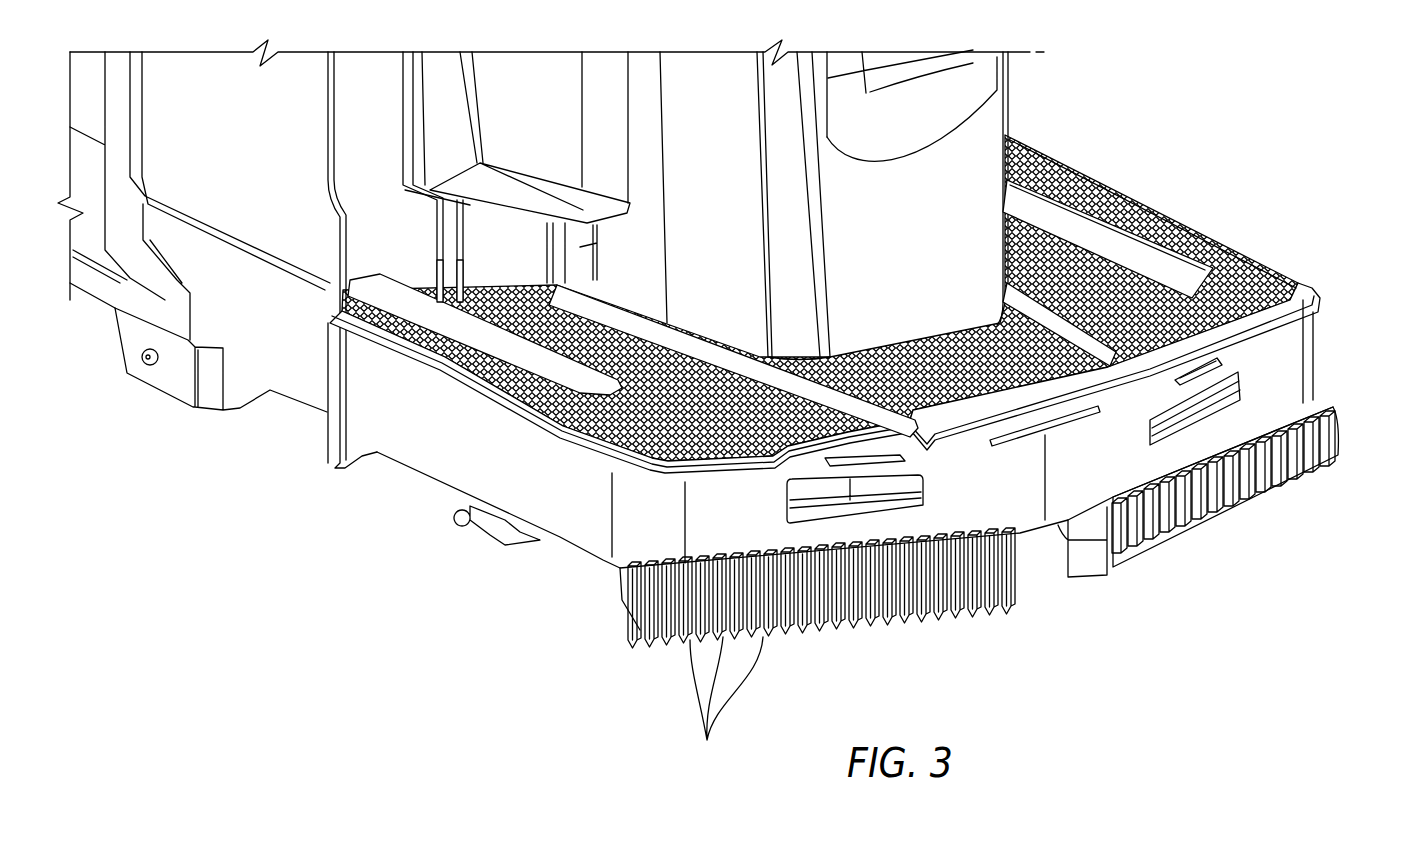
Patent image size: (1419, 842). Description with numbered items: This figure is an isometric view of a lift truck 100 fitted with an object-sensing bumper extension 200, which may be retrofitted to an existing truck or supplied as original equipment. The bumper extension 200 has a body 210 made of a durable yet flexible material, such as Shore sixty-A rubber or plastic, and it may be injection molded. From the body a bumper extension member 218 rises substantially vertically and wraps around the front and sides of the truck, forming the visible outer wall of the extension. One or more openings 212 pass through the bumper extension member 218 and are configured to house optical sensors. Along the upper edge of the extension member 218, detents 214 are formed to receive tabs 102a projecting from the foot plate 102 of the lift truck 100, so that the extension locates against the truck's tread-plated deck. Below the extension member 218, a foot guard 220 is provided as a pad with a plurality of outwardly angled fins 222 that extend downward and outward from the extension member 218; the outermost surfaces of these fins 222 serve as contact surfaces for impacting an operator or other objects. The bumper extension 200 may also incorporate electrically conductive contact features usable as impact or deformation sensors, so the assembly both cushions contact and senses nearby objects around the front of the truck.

The lift truck 100 is at (1013, 98).
The foot plate 102 is at (1192, 270).
The tabs 102a is at (1210, 370).
The object-sensing bumper extension 200 is at (824, 536).
The body 210 is at (405, 472).
The openings 212 is at (780, 499).
The detents 214 is at (1236, 357).
The bumper extension member 218 is at (1007, 498).
The foot guard 220 is at (1090, 552).
The fins 222 is at (726, 705).